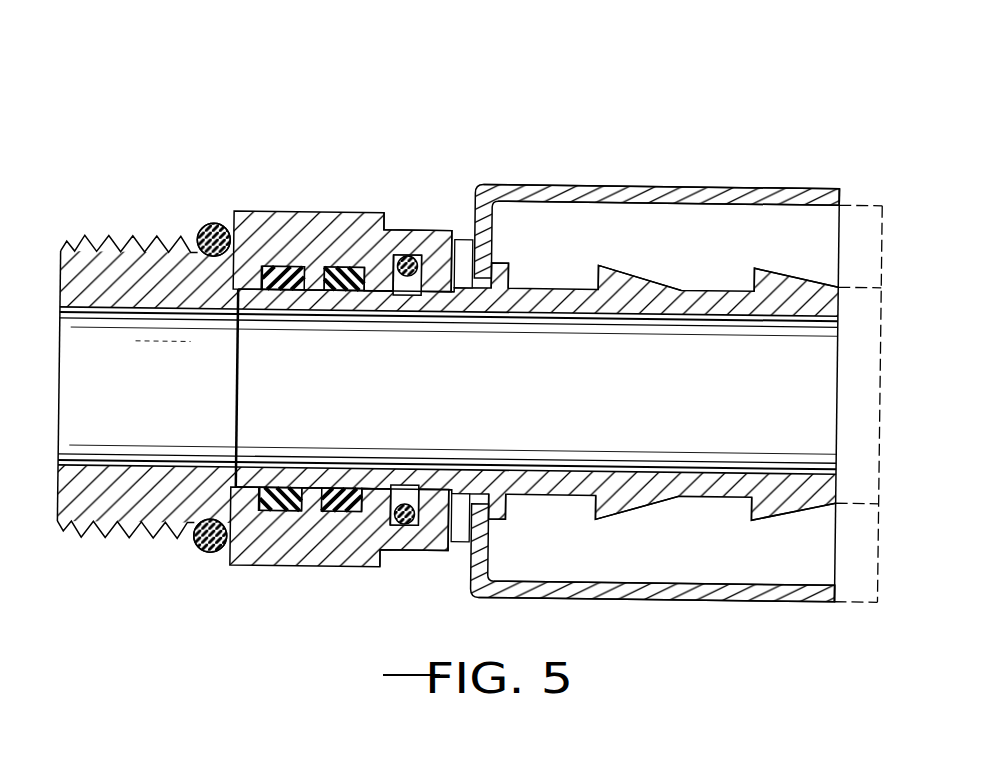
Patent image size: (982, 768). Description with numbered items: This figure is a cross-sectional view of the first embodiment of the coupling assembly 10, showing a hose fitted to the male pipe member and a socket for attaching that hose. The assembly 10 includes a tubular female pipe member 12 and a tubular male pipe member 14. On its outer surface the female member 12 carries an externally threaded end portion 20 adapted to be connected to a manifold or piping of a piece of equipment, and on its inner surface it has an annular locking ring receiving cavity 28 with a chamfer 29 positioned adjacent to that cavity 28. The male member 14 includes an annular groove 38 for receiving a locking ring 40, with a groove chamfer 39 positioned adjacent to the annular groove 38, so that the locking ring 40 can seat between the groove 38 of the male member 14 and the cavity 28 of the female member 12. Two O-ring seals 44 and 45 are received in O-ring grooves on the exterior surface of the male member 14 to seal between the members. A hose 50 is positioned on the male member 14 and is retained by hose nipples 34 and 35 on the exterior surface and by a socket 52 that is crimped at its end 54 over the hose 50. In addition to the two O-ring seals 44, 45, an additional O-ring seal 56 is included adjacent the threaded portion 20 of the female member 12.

The coupling assembly 10 is at (477, 124).
The female pipe member 12 is at (97, 178).
The male pipe member 14 is at (787, 127).
The externally threaded end portion 20 is at (121, 236).
The annular locking ring receiving cavity 28 is at (404, 257).
The chamfer 29 is at (447, 265).
The hose nipple 34 is at (617, 267).
The hose nipple 35 is at (783, 267).
The annular groove 38 is at (393, 277).
The groove chamfer 39 is at (390, 268).
The locking ring 40 is at (410, 285).
The O-ring seal 44 is at (281, 268).
The O-ring seal 45 is at (336, 268).
The hose 50 is at (867, 587).
The socket 52 is at (581, 183).
The end 54 is at (507, 268).
The additional O-ring seal 56 is at (204, 222).